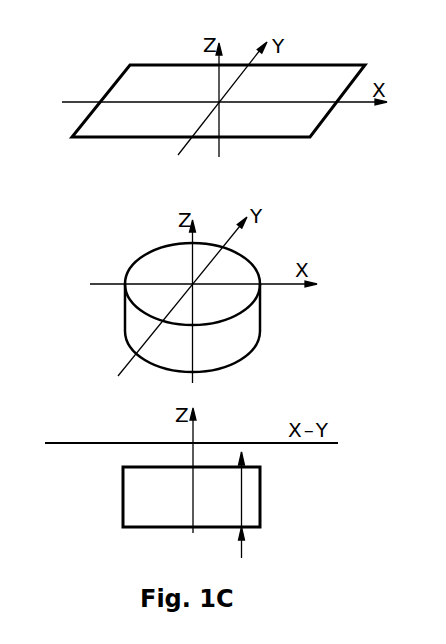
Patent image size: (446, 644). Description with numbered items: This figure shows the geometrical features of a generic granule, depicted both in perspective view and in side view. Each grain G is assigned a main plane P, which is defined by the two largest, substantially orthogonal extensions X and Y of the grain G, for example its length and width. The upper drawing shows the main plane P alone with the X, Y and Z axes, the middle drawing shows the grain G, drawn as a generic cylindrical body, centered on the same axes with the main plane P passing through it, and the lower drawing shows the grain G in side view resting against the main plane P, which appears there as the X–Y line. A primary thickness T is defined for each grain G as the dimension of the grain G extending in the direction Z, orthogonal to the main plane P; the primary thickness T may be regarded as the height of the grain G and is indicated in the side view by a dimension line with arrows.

The main plane P is at (137, 80).
The grain G is at (250, 332).
The primary thickness T is at (242, 545).